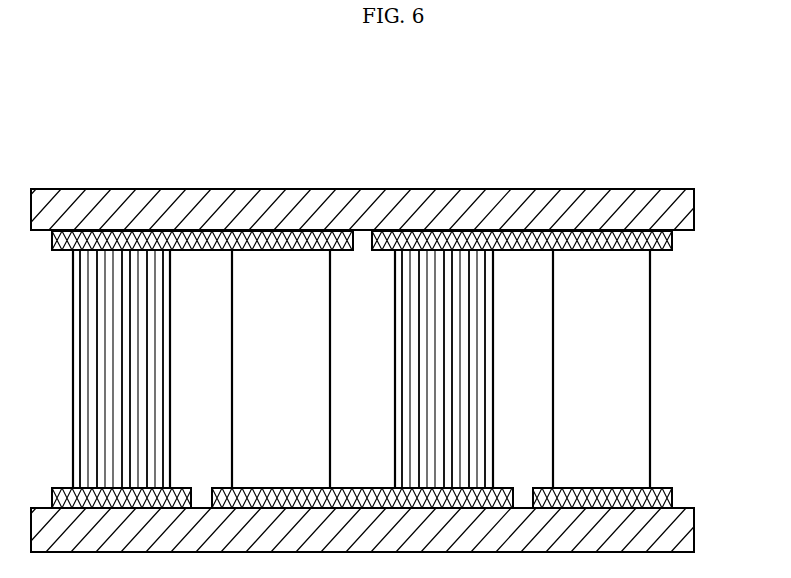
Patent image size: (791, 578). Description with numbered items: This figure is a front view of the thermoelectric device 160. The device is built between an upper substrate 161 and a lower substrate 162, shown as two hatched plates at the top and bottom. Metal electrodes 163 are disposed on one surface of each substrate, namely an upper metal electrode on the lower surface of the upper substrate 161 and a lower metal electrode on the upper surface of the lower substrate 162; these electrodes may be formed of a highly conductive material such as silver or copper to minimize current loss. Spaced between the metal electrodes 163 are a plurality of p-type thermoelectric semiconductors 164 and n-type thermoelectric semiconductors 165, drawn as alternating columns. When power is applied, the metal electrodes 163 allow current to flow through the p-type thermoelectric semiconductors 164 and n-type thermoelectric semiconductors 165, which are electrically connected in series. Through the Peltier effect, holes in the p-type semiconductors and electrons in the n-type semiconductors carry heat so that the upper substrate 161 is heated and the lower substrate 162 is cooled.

The thermoelectric device 160 is at (376, 317).
The upper substrate 161 is at (683, 212).
The lower substrate 162 is at (686, 527).
The metal electrodes 163 is at (672, 243).
The p-type thermoelectric semiconductors 164 is at (477, 381).
The n-type thermoelectric semiconductors 165 is at (642, 324).